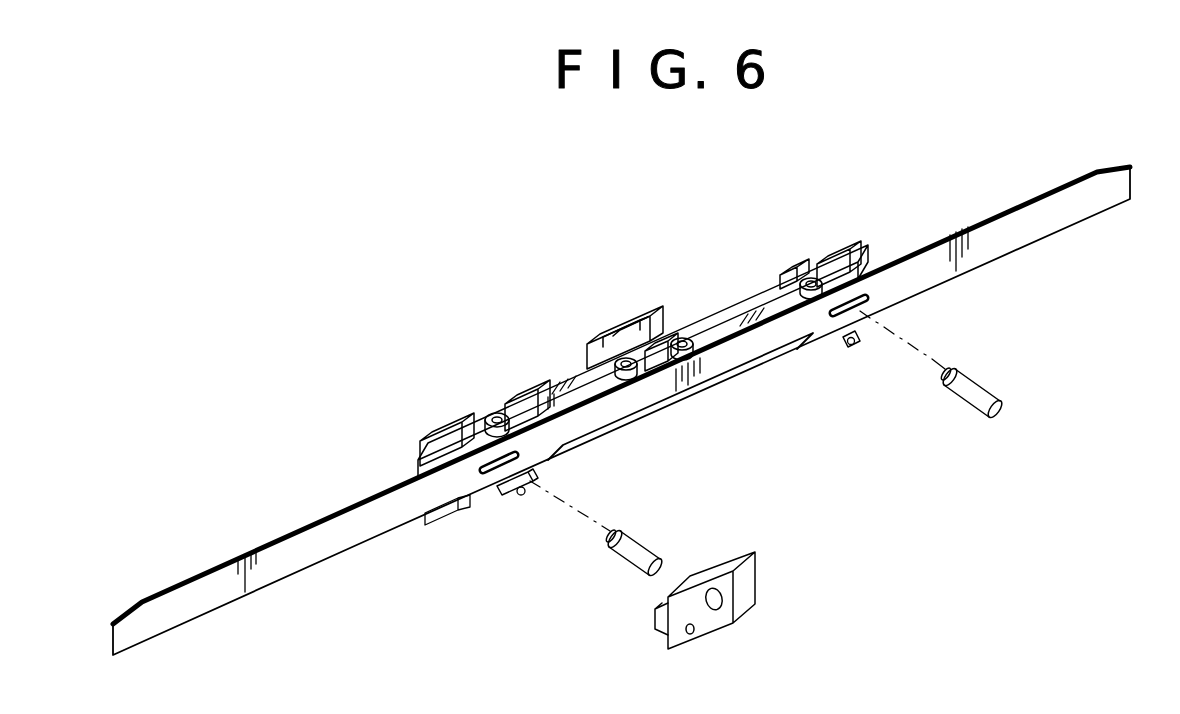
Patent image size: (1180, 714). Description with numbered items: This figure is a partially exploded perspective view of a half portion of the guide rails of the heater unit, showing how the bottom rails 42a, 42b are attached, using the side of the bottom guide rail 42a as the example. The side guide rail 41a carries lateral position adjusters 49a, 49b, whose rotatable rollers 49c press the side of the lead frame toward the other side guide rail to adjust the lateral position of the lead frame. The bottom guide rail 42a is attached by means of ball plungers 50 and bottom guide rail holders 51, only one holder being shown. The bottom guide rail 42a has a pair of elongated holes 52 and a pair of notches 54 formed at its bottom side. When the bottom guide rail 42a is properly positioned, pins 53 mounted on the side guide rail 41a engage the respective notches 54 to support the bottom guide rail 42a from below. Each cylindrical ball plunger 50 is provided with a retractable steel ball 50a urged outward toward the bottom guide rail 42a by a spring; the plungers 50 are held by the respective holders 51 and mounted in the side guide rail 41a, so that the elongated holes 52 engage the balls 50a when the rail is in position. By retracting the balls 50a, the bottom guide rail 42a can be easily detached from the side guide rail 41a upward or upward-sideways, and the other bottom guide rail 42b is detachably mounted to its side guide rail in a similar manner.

The bottom guide rail 42a is at (621, 396).
The bottom guide rail 42b is at (967, 233).
The side guide rail 41a is at (733, 310).
The lateral position adjuster 49a is at (603, 345).
The lateral position adjuster 49b is at (472, 404).
The rotatable roller 49c is at (513, 408).
The ball plunger 50 is at (833, 447).
The retractable steel ball 50a is at (613, 533).
The bottom guide rail holder 51 is at (748, 604).
The elongated hole 52 is at (485, 478).
The pin 53 is at (523, 498).
The notch 54 is at (503, 500).